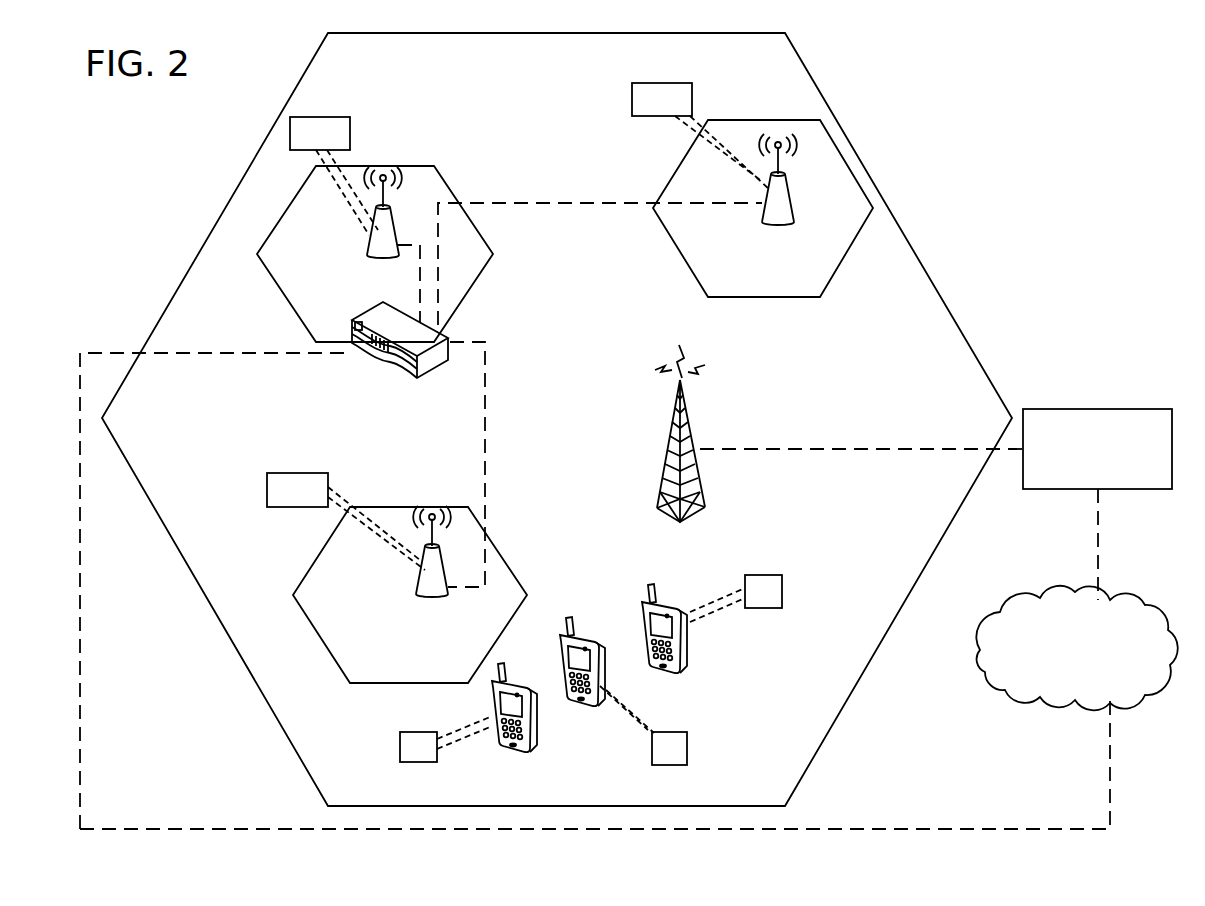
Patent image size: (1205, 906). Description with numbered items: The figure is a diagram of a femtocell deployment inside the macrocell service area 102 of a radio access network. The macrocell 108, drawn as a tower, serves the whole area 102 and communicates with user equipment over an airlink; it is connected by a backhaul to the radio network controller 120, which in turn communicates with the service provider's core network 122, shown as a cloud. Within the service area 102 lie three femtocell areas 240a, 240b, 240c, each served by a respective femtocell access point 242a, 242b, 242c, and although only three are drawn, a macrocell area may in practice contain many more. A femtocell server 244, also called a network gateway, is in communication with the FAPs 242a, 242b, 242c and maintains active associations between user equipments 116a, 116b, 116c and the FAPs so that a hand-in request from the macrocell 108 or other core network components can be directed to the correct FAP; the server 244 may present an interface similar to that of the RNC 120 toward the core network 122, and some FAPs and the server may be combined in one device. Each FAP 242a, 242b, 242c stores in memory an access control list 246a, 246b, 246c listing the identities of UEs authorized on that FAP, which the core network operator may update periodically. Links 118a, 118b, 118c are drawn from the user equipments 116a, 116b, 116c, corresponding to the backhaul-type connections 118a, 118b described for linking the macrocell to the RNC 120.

The macrocell service area 102 is at (226, 250).
The macrocell 108 is at (655, 510).
The user equipment 116a is at (513, 756).
The user equipment 116b is at (572, 708).
The user equipment 116c is at (660, 673).
The backhaul connection 118a is at (400, 748).
The backhaul connection 118b is at (687, 740).
The forward link 118c is at (782, 590).
The radio network controller 120 is at (1097, 449).
The service provider's core network 122 is at (1067, 584).
The femtocell area 240a is at (505, 549).
The femtocell area 240b is at (878, 195).
The femtocell area 240c is at (434, 155).
The femtocell access point 242a is at (420, 594).
The femtocell access point 242b is at (770, 222).
The femtocell access point 242c is at (372, 256).
The femtocell server 244 is at (378, 363).
The access control list 246a is at (290, 473).
The access control list 246b is at (652, 83).
The access control list 246c is at (320, 117).